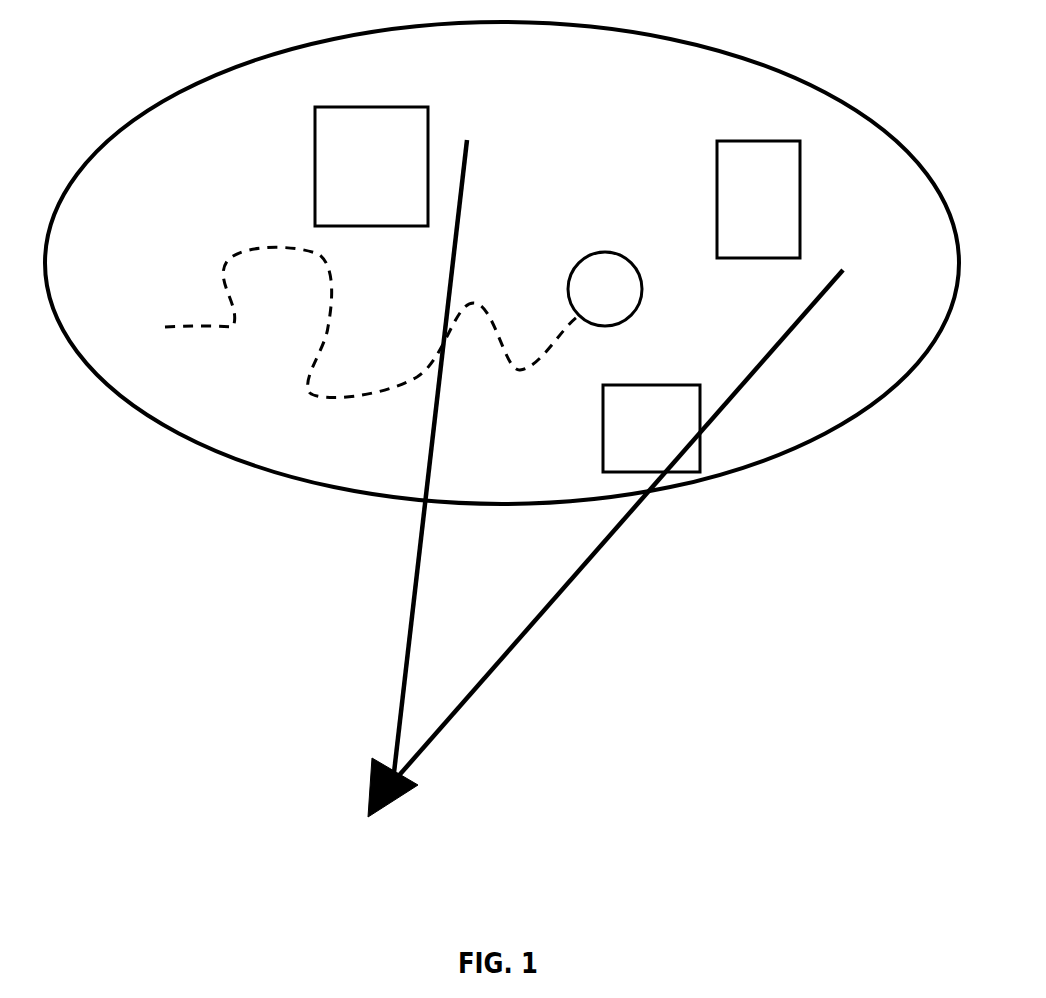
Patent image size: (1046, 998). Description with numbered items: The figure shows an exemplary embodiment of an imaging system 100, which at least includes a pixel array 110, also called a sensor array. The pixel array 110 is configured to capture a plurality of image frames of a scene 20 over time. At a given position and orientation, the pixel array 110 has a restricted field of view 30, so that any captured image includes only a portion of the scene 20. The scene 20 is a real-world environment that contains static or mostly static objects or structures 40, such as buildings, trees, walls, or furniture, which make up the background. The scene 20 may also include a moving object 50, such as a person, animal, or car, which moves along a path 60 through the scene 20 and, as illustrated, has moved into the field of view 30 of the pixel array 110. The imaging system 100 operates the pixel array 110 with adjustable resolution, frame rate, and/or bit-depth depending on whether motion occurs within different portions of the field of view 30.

The scene 20 is at (302, 47).
The field of view 30 is at (573, 578).
The objects or structures 40 is at (376, 107).
The moving object 50 is at (621, 253).
The path 60 is at (268, 248).
The imaging system 100 is at (470, 834).
The pixel array 110 is at (372, 782).